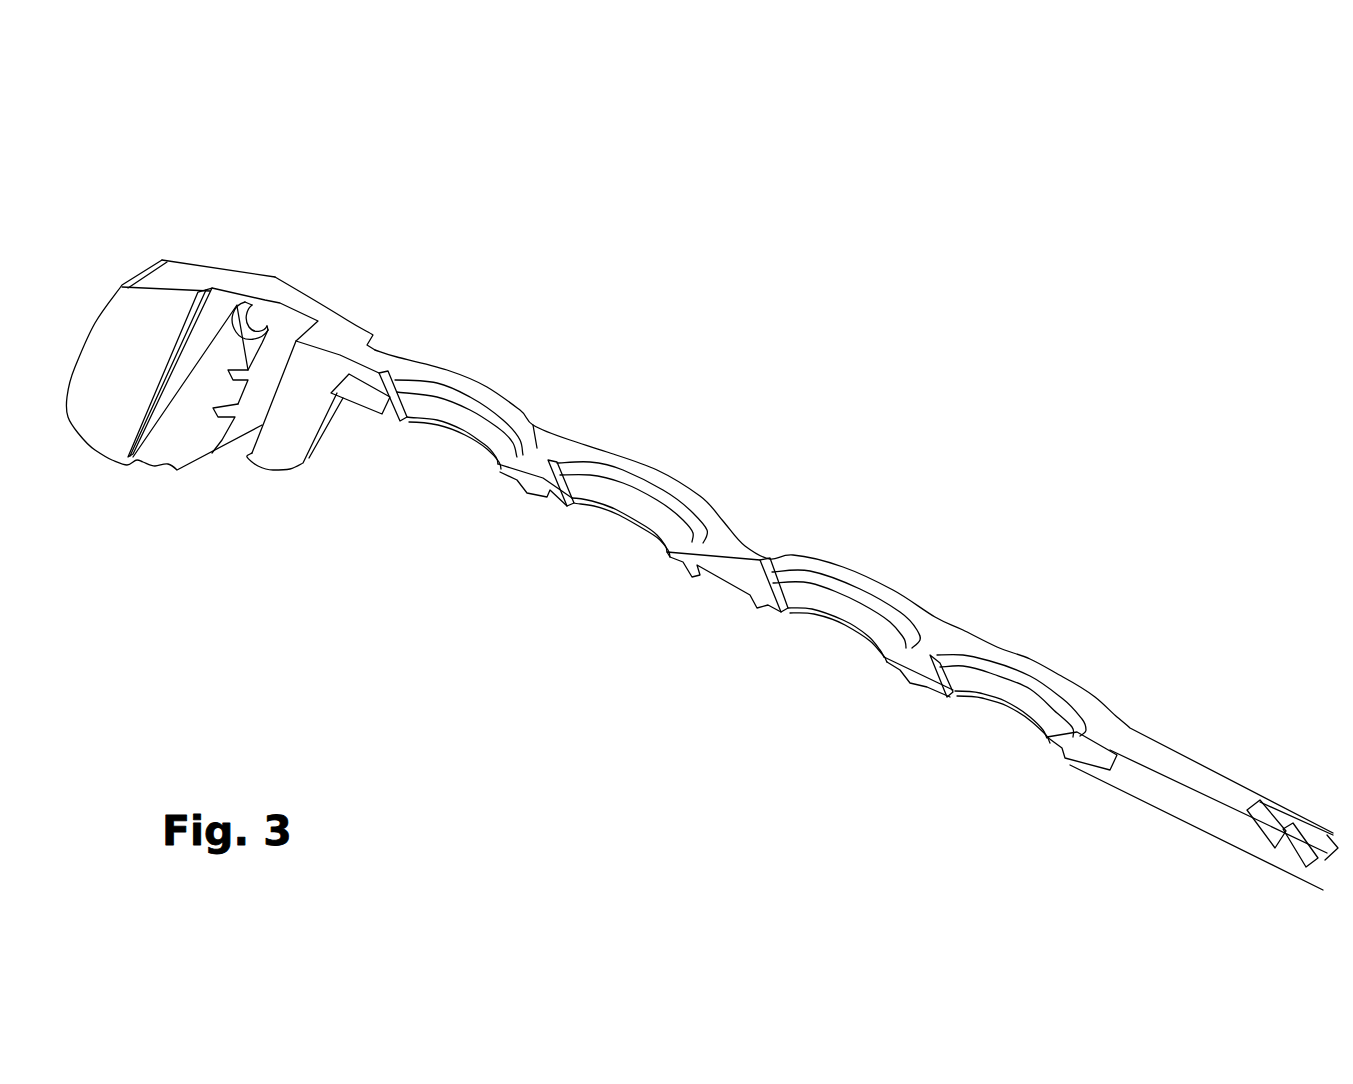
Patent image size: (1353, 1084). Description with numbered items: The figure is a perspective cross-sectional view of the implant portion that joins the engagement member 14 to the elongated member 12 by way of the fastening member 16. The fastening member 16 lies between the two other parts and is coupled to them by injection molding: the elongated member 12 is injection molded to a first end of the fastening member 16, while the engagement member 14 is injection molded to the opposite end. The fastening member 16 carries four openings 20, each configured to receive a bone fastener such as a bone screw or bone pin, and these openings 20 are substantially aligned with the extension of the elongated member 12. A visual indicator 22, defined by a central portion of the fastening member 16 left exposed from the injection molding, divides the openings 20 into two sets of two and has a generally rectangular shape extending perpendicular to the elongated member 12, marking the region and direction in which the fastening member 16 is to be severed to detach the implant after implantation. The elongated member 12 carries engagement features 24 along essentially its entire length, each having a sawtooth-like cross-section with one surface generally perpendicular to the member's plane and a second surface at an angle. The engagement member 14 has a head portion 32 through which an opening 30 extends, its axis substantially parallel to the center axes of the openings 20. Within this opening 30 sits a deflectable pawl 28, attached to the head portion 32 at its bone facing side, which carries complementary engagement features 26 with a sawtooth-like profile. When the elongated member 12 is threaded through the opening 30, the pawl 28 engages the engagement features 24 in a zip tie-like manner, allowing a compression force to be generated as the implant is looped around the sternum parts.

The elongated member 12 is at (1200, 763).
The engagement member 14 is at (123, 300).
The fastening member 16 is at (538, 473).
The openings 20 is at (1005, 727).
The visual indicator 22 is at (735, 553).
The engagement features 24 is at (1303, 840).
The complementary engagement features 26 is at (235, 437).
The deflectable pawl 28 is at (232, 353).
The opening 30 is at (279, 335).
The head portion 32 is at (302, 390).